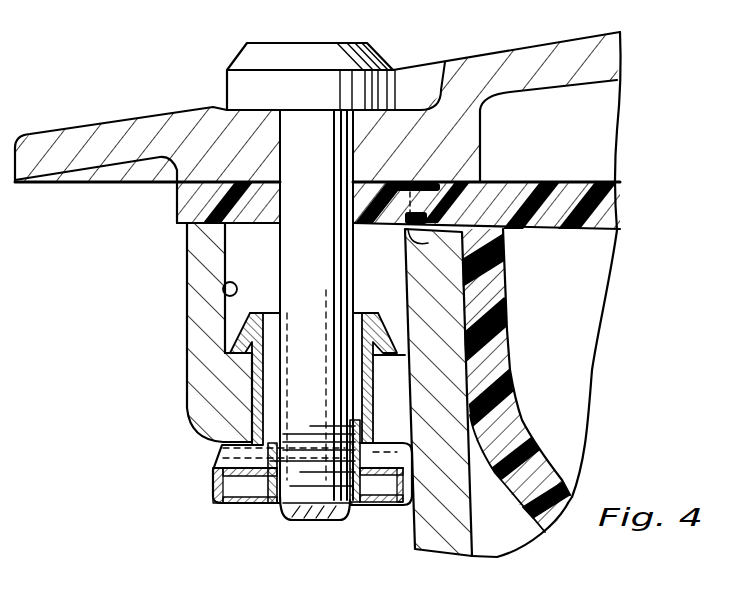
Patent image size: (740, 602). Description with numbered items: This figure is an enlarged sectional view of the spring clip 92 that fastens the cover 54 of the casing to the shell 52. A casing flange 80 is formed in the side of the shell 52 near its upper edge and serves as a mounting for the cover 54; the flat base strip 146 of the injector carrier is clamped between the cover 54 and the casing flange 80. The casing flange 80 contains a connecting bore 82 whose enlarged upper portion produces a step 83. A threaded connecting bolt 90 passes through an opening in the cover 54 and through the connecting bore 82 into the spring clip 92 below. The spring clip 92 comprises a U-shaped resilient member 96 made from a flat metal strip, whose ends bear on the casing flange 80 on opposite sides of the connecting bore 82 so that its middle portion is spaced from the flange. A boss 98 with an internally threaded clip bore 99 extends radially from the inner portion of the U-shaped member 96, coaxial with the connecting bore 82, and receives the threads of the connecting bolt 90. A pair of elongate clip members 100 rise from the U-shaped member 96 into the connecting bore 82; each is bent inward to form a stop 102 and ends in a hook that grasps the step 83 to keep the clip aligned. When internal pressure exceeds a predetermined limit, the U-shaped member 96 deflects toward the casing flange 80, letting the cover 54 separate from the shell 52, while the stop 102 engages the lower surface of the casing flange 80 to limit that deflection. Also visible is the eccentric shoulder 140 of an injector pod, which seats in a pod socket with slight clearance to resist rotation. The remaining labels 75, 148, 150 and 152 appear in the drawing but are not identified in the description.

The shell 52 is at (459, 540).
The cover 54 is at (50, 147).
The housing 75 is at (487, 48).
The casing flange 80 is at (437, 298).
The connecting bore 82 is at (230, 292).
The step 83 is at (233, 347).
The connecting bolt 90 is at (250, 50).
The spring clip 92 is at (165, 497).
The U-shaped resilient member 96 is at (223, 453).
The boss 98 is at (272, 478).
The clip bore 99 is at (280, 523).
The clip member 100 is at (190, 423).
The stop 102 is at (383, 476).
The shoulder 140 is at (497, 347).
The base strip 146 is at (187, 212).
The seal ring 148 is at (412, 180).
The groove 150 is at (445, 157).
The passage 152 is at (470, 170).